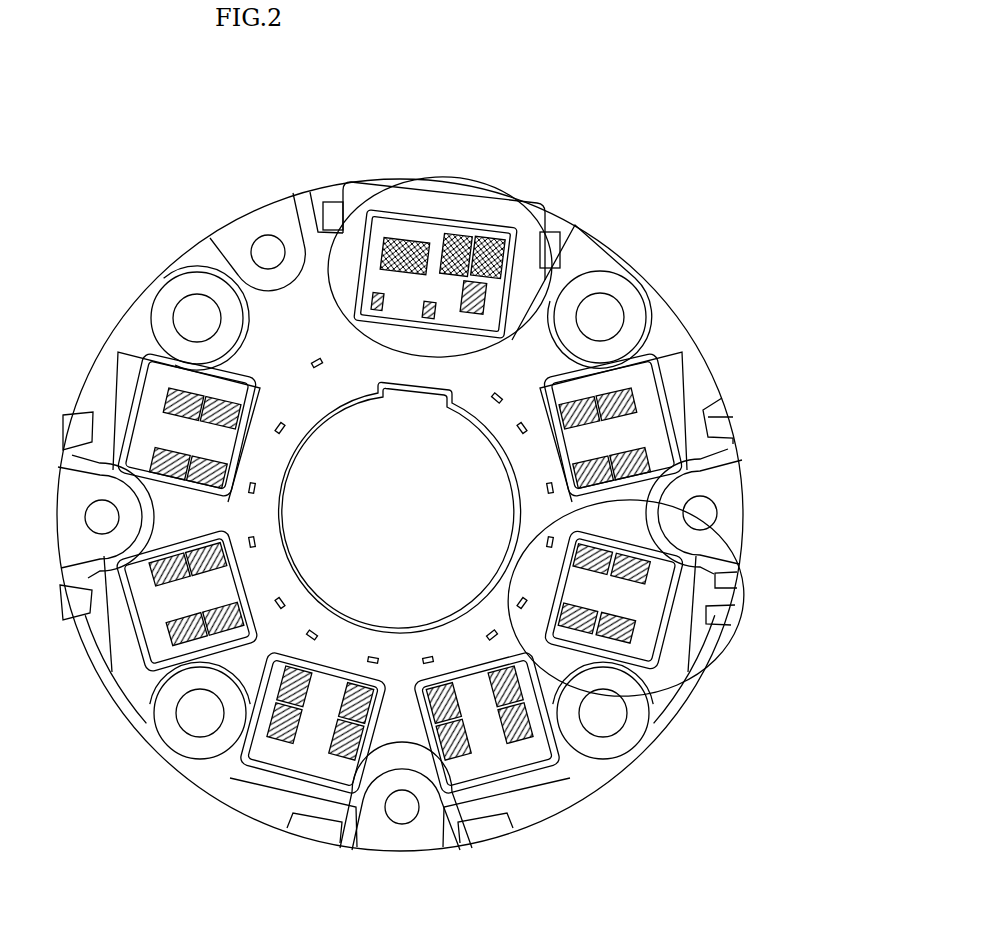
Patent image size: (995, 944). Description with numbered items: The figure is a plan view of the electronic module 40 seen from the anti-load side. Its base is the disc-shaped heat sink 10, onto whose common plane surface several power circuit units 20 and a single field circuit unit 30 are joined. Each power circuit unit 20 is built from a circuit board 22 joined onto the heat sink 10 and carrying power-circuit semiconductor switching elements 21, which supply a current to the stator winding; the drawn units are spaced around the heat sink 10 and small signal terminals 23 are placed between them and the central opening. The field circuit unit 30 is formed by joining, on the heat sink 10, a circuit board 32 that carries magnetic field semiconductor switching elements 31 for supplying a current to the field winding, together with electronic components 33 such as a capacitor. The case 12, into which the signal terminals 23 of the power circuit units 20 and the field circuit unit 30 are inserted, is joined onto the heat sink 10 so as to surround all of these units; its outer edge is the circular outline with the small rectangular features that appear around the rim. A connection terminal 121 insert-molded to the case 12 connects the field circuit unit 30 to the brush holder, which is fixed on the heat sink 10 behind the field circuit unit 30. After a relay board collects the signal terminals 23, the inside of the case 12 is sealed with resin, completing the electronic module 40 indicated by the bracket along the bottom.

The heat sink 10 is at (560, 762).
The case 12 is at (668, 328).
The connection terminal 121 is at (718, 428).
The power circuit unit 20 is at (718, 550).
The power-circuit semiconductor switching element 21 is at (627, 636).
The circuit board 22 is at (653, 608).
The signal terminal 23 is at (313, 362).
The field circuit unit 30 is at (394, 190).
The magnetic field semiconductor switching element 31 is at (377, 292).
The circuit board 32 is at (438, 233).
The electronic component 33 is at (403, 240).
The electronic module 40 is at (712, 828).